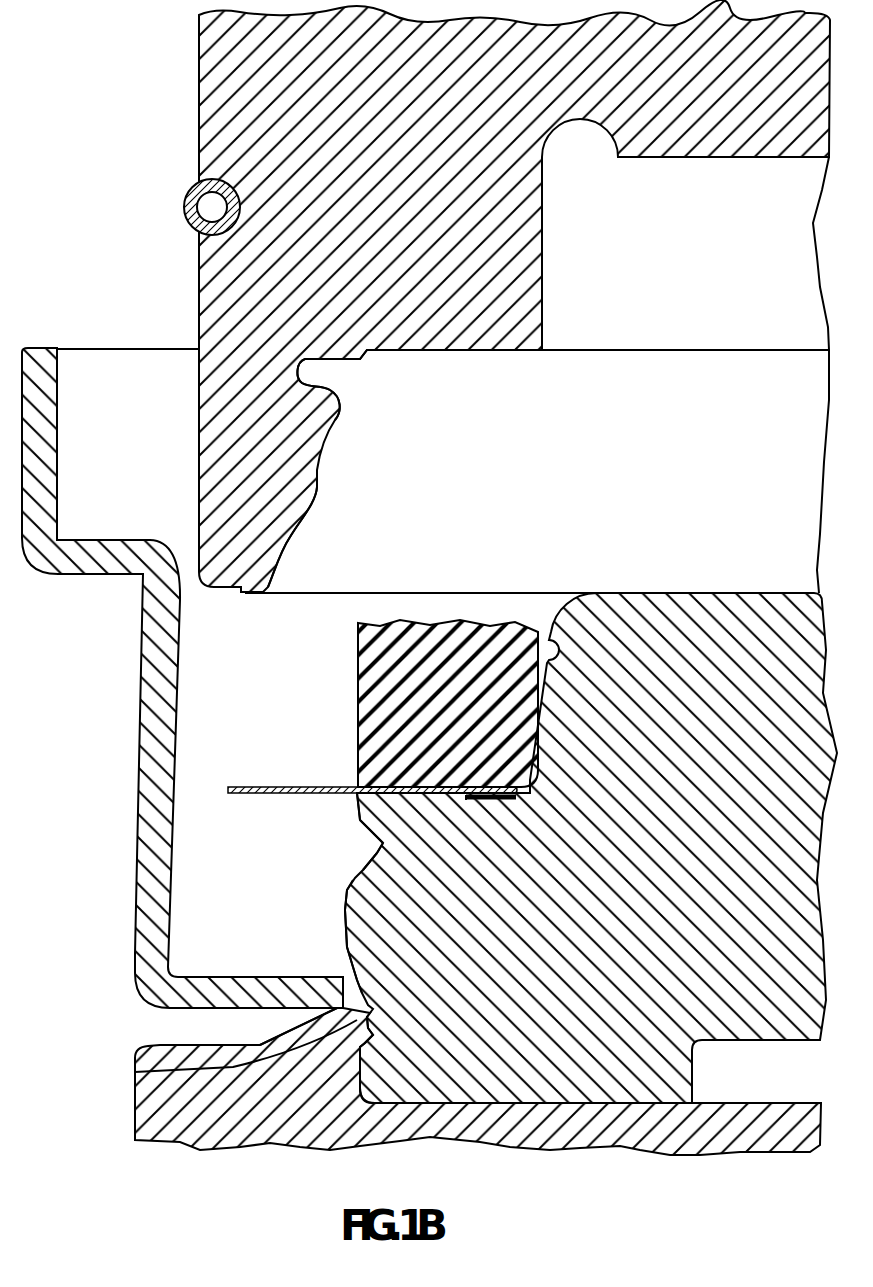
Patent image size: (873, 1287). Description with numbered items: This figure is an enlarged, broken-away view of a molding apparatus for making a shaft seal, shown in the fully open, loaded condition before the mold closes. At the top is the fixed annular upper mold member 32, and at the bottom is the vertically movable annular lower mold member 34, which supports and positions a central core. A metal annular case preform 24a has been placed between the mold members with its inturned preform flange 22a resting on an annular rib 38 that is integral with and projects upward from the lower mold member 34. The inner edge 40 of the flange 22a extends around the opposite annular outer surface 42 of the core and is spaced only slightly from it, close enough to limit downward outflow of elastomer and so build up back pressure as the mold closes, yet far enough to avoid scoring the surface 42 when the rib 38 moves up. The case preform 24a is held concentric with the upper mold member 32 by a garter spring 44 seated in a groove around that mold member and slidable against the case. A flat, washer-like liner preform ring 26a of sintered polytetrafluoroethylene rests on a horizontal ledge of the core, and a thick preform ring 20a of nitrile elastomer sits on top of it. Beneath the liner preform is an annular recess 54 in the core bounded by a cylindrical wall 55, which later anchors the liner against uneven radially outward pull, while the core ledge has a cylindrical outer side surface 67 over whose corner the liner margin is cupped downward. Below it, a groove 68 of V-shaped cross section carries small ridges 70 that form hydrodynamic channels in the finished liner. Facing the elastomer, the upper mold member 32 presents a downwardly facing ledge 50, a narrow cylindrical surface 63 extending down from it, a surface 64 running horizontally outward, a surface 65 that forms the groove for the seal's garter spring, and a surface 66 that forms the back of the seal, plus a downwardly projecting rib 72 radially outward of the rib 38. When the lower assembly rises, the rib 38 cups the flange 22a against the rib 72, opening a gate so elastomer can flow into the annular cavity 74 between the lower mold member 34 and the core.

The upper mold member 32 is at (199, 77).
The garter spring 44 is at (190, 190).
The ledge 50 is at (473, 352).
The cylindrical surface 63 is at (373, 353).
The surface 64 is at (333, 363).
The surface 65 is at (340, 407).
The surface 66 is at (318, 485).
The rib 72 is at (245, 594).
The preform 24a is at (142, 680).
The preform flange 22a is at (207, 977).
The preform ring 20a is at (378, 694).
The liner preform ring 26a is at (303, 787).
The recess 54 is at (503, 795).
The cylindrical wall 55 is at (477, 800).
The cylindrical outer side surface 67 is at (357, 803).
The ridges 70 is at (363, 825).
The groove 68 is at (382, 843).
The outer surface 42 is at (343, 957).
The edge 40 is at (337, 977).
The rib 38 is at (263, 1033).
The cavity 74 is at (147, 1072).
The lower mold member 34 is at (135, 1117).